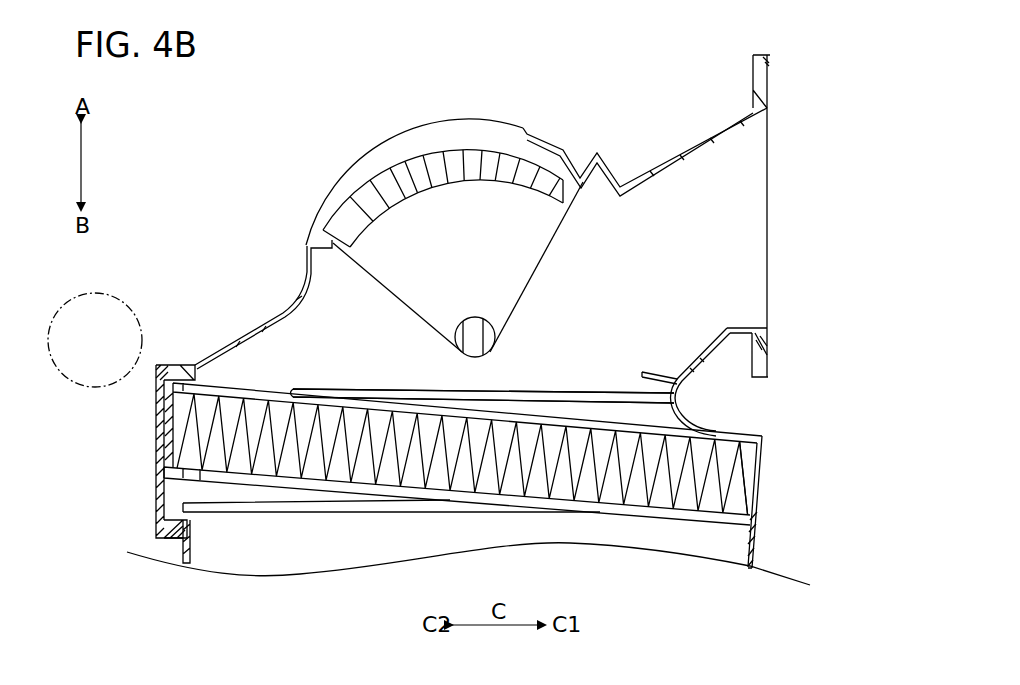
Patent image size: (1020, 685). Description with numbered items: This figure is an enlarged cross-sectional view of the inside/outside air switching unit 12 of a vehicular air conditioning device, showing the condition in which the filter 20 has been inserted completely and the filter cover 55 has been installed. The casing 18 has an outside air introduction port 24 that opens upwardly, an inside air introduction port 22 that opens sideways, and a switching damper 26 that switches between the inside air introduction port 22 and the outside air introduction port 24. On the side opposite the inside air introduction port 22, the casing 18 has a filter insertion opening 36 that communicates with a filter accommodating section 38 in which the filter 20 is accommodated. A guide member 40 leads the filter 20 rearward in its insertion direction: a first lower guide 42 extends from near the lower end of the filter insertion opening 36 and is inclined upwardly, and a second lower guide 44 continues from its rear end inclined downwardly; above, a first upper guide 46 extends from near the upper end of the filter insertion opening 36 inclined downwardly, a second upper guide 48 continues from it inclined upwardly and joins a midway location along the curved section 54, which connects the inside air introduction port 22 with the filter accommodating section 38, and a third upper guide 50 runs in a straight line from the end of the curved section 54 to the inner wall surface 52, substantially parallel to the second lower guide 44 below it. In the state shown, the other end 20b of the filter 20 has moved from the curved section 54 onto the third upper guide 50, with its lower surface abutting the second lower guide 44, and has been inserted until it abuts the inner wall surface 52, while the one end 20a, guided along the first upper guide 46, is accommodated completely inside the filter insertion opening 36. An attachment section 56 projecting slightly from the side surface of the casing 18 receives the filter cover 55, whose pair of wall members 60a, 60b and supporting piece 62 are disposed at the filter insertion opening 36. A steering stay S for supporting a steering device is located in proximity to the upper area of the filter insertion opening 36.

The inside/outside air switching unit 12 is at (636, 116).
The casing 18 is at (266, 305).
The filter 20 is at (388, 472).
The one end of the filter 20a is at (170, 440).
The other end of the filter 20b is at (747, 465).
The inside air introduction port 22 is at (741, 232).
The outside air introduction port 24 is at (423, 138).
The switching damper 26 is at (390, 270).
The filter insertion opening 36 is at (167, 530).
The filter accommodating section 38 is at (533, 410).
The guide member 40 is at (579, 386).
The first lower guide 42 is at (260, 503).
The second lower guide 44 is at (523, 503).
The first upper guide 46 is at (293, 390).
The second upper guide 48 is at (408, 397).
The third upper guide 50 is at (740, 432).
The inner wall surface 52 is at (755, 493).
The curved section 54 is at (680, 410).
The filter cover 55 is at (145, 480).
The attachment section 56 is at (175, 370).
The wall member 60a is at (208, 392).
The wall member 60b is at (183, 527).
The supporting piece 62 is at (190, 472).
The steering stay S is at (102, 293).